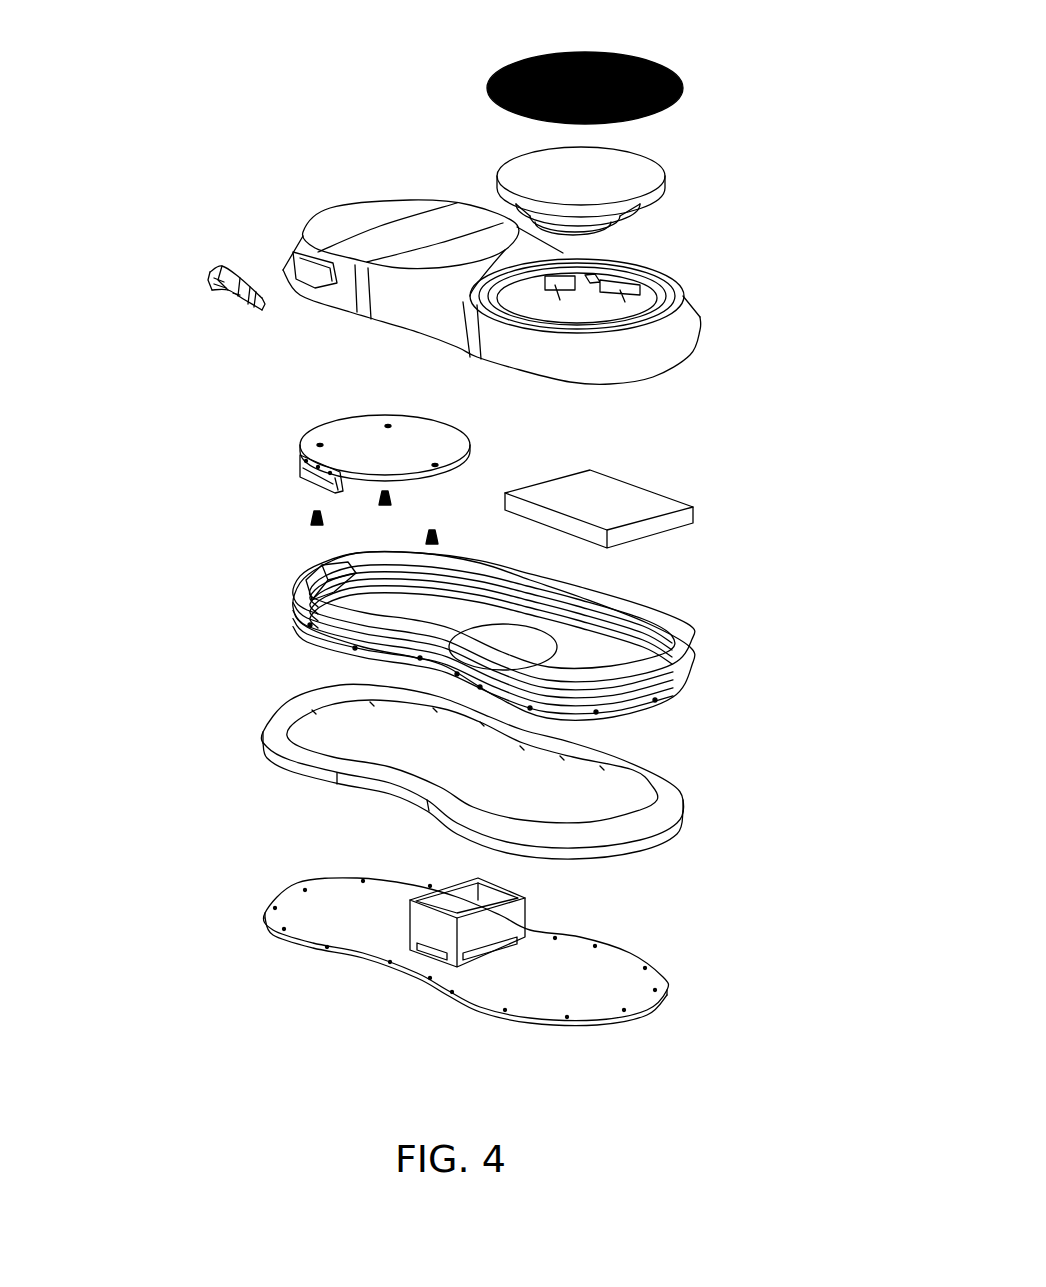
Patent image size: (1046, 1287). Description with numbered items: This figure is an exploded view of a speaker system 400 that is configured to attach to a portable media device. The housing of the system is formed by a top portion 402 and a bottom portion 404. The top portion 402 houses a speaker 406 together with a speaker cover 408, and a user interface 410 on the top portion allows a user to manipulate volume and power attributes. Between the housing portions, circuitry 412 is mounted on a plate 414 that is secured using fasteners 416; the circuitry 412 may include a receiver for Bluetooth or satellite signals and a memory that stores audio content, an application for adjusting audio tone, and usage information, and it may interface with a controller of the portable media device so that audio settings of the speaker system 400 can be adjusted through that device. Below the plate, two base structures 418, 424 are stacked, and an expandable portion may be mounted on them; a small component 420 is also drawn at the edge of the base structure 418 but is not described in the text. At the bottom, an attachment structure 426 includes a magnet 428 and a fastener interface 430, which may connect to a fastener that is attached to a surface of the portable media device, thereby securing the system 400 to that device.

The speaker system 400 is at (372, 65).
The top portion 402 is at (305, 197).
The bottom portion 404 is at (357, 948).
The speaker 406 is at (668, 212).
The speaker cover 408 is at (695, 103).
The user interface 410 is at (195, 260).
The circuitry 412 is at (593, 492).
The plate 414 is at (326, 418).
The fasteners 416 is at (312, 512).
The base structure 418 is at (683, 680).
The connector clip 420 is at (305, 602).
The base structure 424 is at (287, 703).
The attachment structure 426 is at (407, 895).
The magnet 428 is at (442, 860).
The fastener interface 430 is at (520, 948).